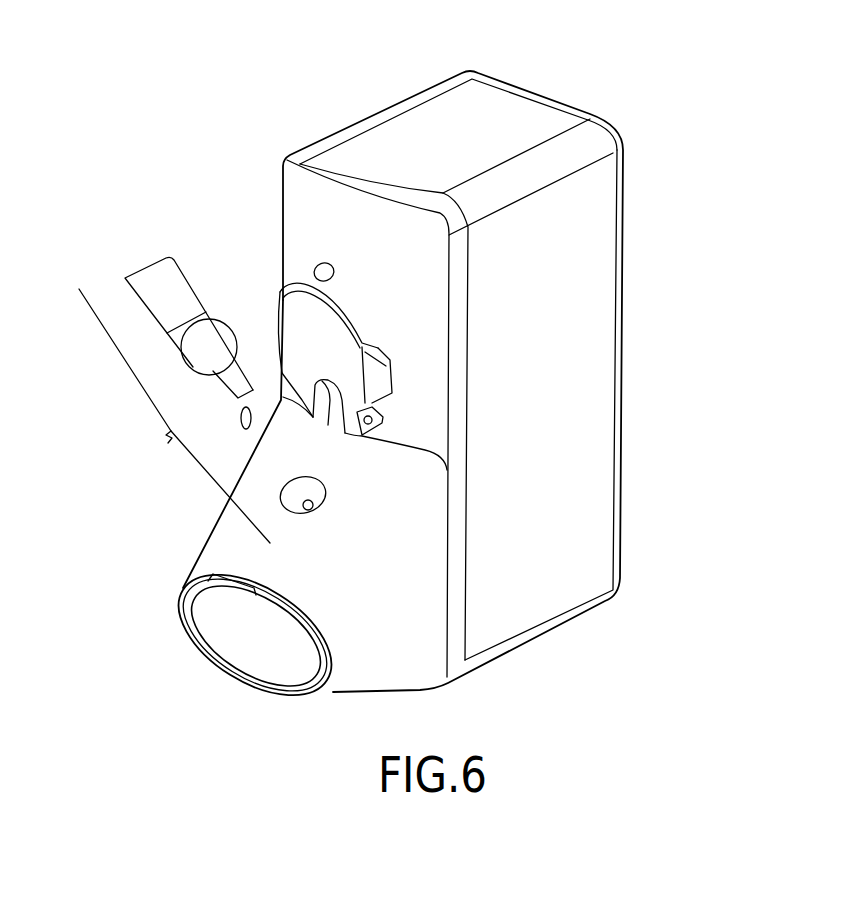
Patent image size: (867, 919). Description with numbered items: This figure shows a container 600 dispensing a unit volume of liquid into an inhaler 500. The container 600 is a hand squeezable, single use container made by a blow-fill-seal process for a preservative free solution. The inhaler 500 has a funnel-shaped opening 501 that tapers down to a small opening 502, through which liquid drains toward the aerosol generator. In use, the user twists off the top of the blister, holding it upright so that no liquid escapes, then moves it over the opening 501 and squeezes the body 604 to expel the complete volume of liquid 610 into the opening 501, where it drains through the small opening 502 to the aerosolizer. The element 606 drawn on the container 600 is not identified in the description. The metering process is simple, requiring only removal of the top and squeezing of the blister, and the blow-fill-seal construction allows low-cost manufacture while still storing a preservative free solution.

The inhaler 500 is at (588, 66).
The opening 501 is at (323, 474).
The small opening 502 is at (309, 510).
The container 600 is at (216, 252).
The cartridge container 606 is at (164, 287).
The body 604 is at (198, 362).
The liquid 610 is at (238, 415).